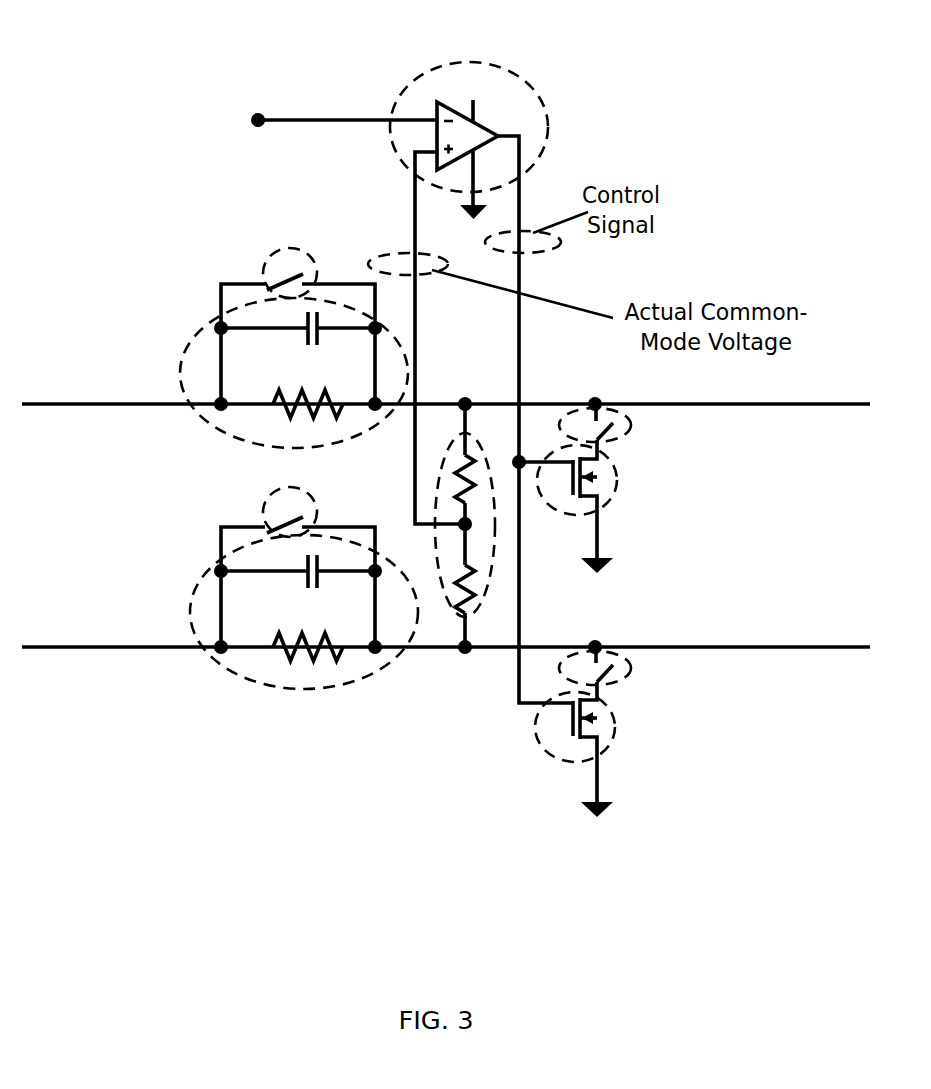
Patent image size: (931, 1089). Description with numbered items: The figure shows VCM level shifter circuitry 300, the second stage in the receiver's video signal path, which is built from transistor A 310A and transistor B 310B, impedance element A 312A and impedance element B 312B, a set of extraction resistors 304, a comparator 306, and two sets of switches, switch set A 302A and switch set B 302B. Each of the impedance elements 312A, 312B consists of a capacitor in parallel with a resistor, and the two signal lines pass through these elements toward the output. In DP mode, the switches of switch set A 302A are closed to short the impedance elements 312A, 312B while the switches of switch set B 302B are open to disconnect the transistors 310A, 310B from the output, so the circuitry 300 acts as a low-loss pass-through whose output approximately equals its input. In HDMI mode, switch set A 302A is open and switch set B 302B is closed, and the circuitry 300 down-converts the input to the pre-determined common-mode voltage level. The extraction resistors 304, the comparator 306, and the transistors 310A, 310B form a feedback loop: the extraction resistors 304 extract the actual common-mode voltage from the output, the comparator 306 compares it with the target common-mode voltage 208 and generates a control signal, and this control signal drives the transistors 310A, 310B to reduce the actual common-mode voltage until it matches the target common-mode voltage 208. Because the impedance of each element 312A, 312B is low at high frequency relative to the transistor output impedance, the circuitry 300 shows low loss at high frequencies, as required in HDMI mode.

The VCM level shifter circuitry 300 is at (226, 821).
The target common-mode voltage 208 is at (304, 63).
The comparator 306 is at (548, 128).
The switch set A 302A is at (261, 264).
The switch set B 302B is at (632, 412).
The impedance element A 312A is at (178, 375).
The impedance element B 312B is at (188, 617).
The set of extraction resistors 304 is at (458, 615).
The transistor A 310A is at (620, 495).
The transistor B 310B is at (612, 737).